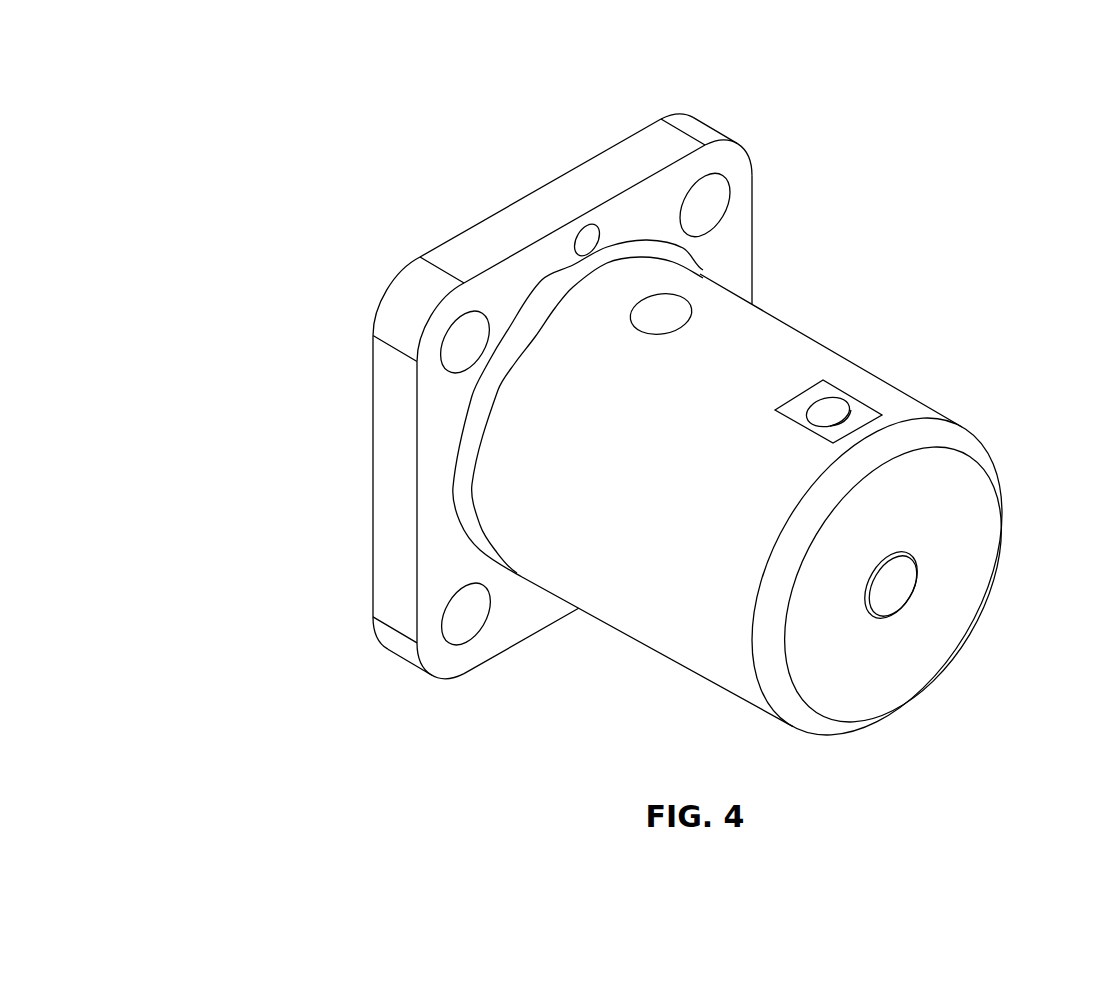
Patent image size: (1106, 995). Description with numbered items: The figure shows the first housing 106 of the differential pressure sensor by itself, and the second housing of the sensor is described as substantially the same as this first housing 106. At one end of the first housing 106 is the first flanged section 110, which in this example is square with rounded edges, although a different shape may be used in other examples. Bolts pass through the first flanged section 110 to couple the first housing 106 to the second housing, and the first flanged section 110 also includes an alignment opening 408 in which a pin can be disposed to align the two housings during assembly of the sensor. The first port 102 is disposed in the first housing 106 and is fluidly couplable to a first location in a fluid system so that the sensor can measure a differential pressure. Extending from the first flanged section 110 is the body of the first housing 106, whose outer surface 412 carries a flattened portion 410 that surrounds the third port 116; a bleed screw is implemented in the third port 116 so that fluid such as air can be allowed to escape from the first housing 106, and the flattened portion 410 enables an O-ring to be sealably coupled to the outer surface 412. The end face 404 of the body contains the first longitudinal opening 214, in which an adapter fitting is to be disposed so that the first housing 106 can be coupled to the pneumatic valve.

The first port 102 is at (683, 300).
The first housing 106 is at (286, 100).
The first flanged section 110 is at (372, 433).
The third port 116 is at (848, 412).
The first longitudinal opening 214 is at (913, 590).
The end face 404 is at (972, 460).
The alignment opening 408 is at (582, 228).
The flattened portion 410 is at (823, 382).
The outer surface 412 is at (710, 607).